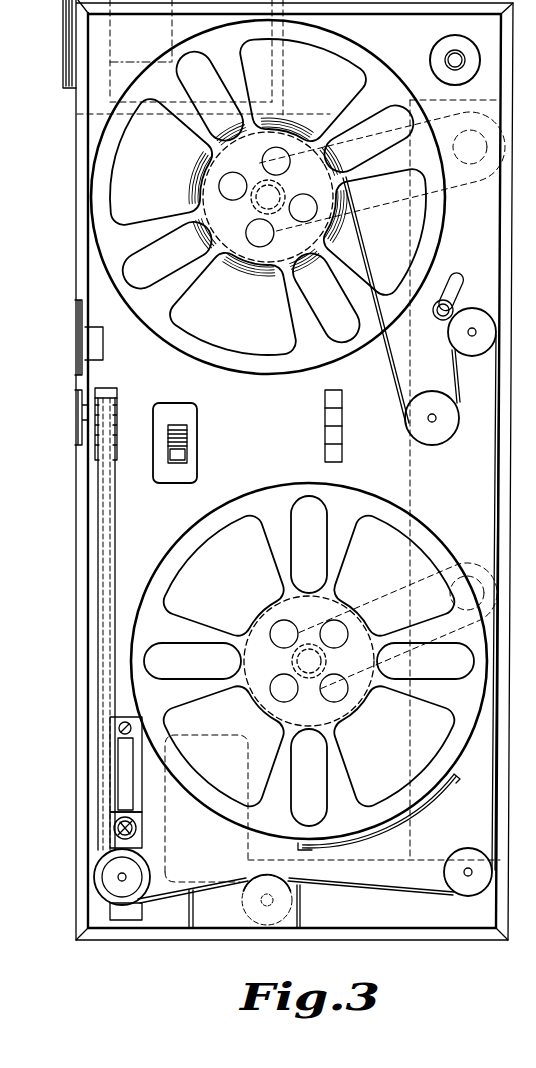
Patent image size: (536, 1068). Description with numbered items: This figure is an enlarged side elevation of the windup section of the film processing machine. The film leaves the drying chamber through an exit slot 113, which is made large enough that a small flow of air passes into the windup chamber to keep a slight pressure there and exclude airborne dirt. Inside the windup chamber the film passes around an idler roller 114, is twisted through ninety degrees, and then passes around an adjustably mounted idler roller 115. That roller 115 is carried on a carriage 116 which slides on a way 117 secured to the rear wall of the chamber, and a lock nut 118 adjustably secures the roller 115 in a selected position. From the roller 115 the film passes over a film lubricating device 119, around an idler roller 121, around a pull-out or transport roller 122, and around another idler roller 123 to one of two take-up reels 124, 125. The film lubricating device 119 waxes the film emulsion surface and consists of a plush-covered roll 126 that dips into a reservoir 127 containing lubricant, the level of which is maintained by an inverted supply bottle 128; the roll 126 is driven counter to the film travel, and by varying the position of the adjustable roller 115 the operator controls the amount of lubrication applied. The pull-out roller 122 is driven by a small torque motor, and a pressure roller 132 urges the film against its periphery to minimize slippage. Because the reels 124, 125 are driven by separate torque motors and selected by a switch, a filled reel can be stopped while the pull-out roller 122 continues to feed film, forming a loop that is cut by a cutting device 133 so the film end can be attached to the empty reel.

The exit slot 113 is at (106, 392).
The idler roller 114 is at (120, 400).
The adjustably mounted idler roller 115 is at (100, 873).
The carriage 116 is at (112, 842).
The way 117 is at (112, 760).
The lock nut 118 is at (114, 826).
The film lubricating device 119 is at (303, 908).
The idler roller 121 is at (470, 896).
The pull-out or transport roller 122 is at (455, 332).
The idler roller 123 is at (438, 438).
The take-up reel 124 is at (278, 373).
The take-up reel 125 is at (279, 492).
The plush-covered roll 126 is at (262, 880).
The reservoir 127 is at (226, 913).
The inverted supply bottle 128 is at (183, 873).
The pressure roller 132 is at (440, 300).
The cutting device 133 is at (340, 430).